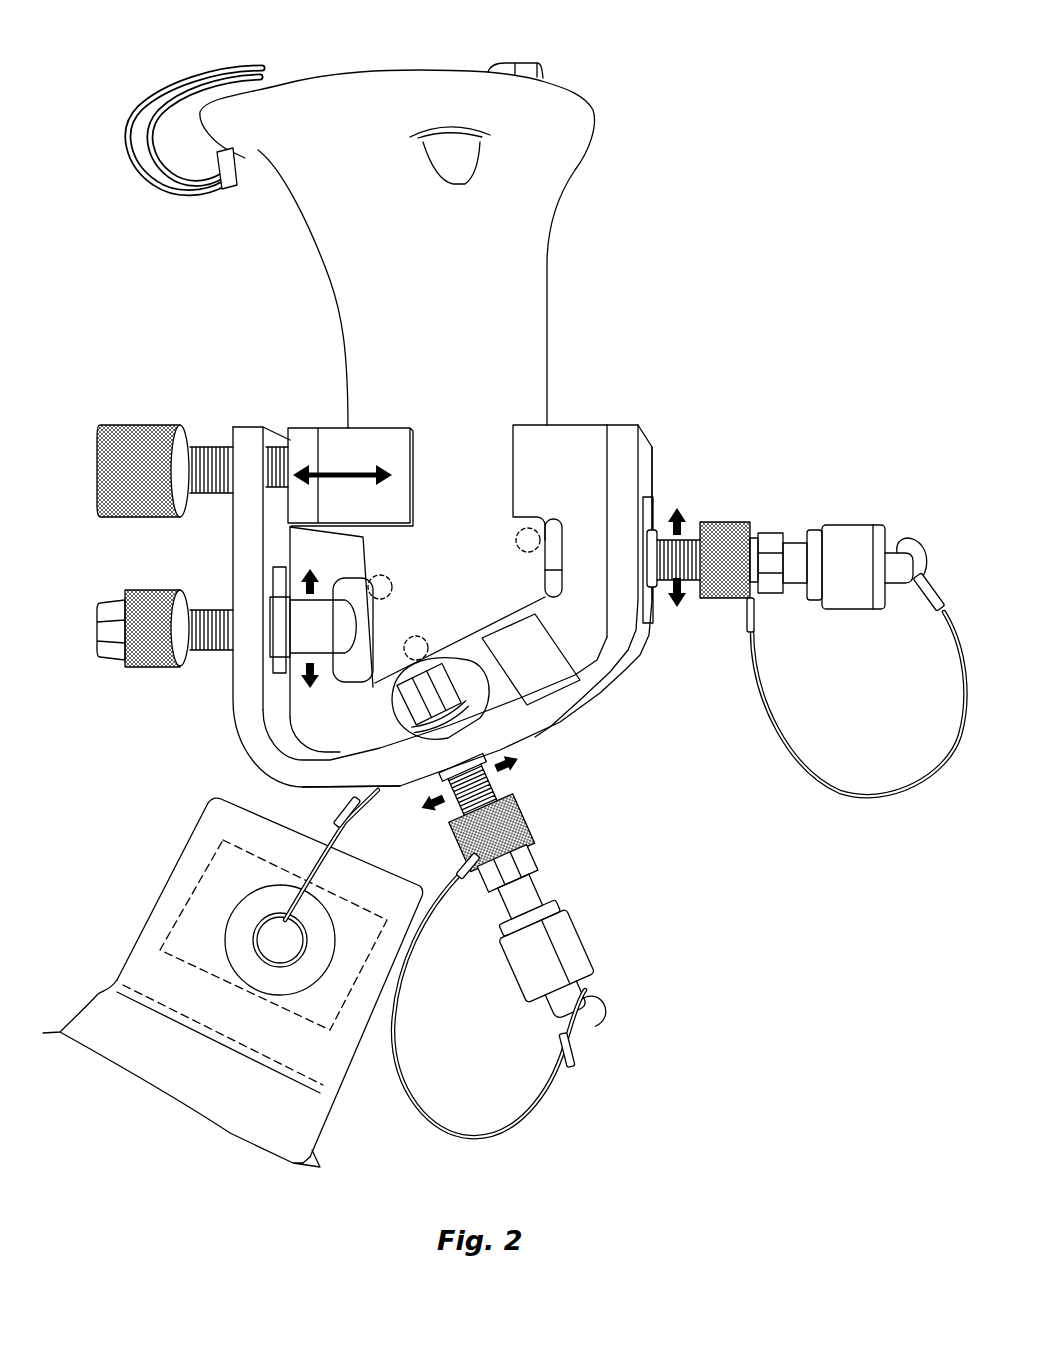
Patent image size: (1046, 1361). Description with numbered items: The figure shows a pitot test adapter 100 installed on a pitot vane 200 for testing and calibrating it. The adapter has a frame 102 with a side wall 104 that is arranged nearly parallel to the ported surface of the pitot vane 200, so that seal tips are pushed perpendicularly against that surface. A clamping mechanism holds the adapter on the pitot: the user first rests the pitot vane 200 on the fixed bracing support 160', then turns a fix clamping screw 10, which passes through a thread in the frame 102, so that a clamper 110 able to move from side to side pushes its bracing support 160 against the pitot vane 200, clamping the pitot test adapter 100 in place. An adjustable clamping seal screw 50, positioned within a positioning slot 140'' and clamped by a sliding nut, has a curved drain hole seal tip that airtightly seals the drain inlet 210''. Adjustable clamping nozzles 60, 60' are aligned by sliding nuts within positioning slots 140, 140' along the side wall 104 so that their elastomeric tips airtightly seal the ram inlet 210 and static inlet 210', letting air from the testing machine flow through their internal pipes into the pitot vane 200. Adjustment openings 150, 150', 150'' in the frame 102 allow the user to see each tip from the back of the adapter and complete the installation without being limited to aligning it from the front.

The fix clamping screw 10 is at (155, 424).
The adjustable clamping seal screw 50 is at (150, 669).
The adjustable clamping nozzle 60 is at (832, 629).
The adjustable clamping nozzle 60' is at (529, 995).
The pitot test adapter 100 is at (654, 419).
The frame 102 is at (340, 727).
The side wall 104 is at (624, 435).
The clamper 110 is at (288, 417).
The positioning slot 140 is at (680, 592).
The positioning slot 140' is at (494, 780).
The positioning slot 140'' is at (208, 606).
The adjustment opening 150 is at (626, 622).
The adjustment opening 150' is at (553, 701).
The adjustment opening 150'' is at (258, 657).
The bracing support 160 is at (350, 439).
The fixed bracing support 160' is at (560, 448).
The pitot vane 200 is at (592, 173).
The ram inlet 210 is at (498, 508).
The static inlet 210' is at (444, 624).
The drain inlet 210'' is at (410, 563).